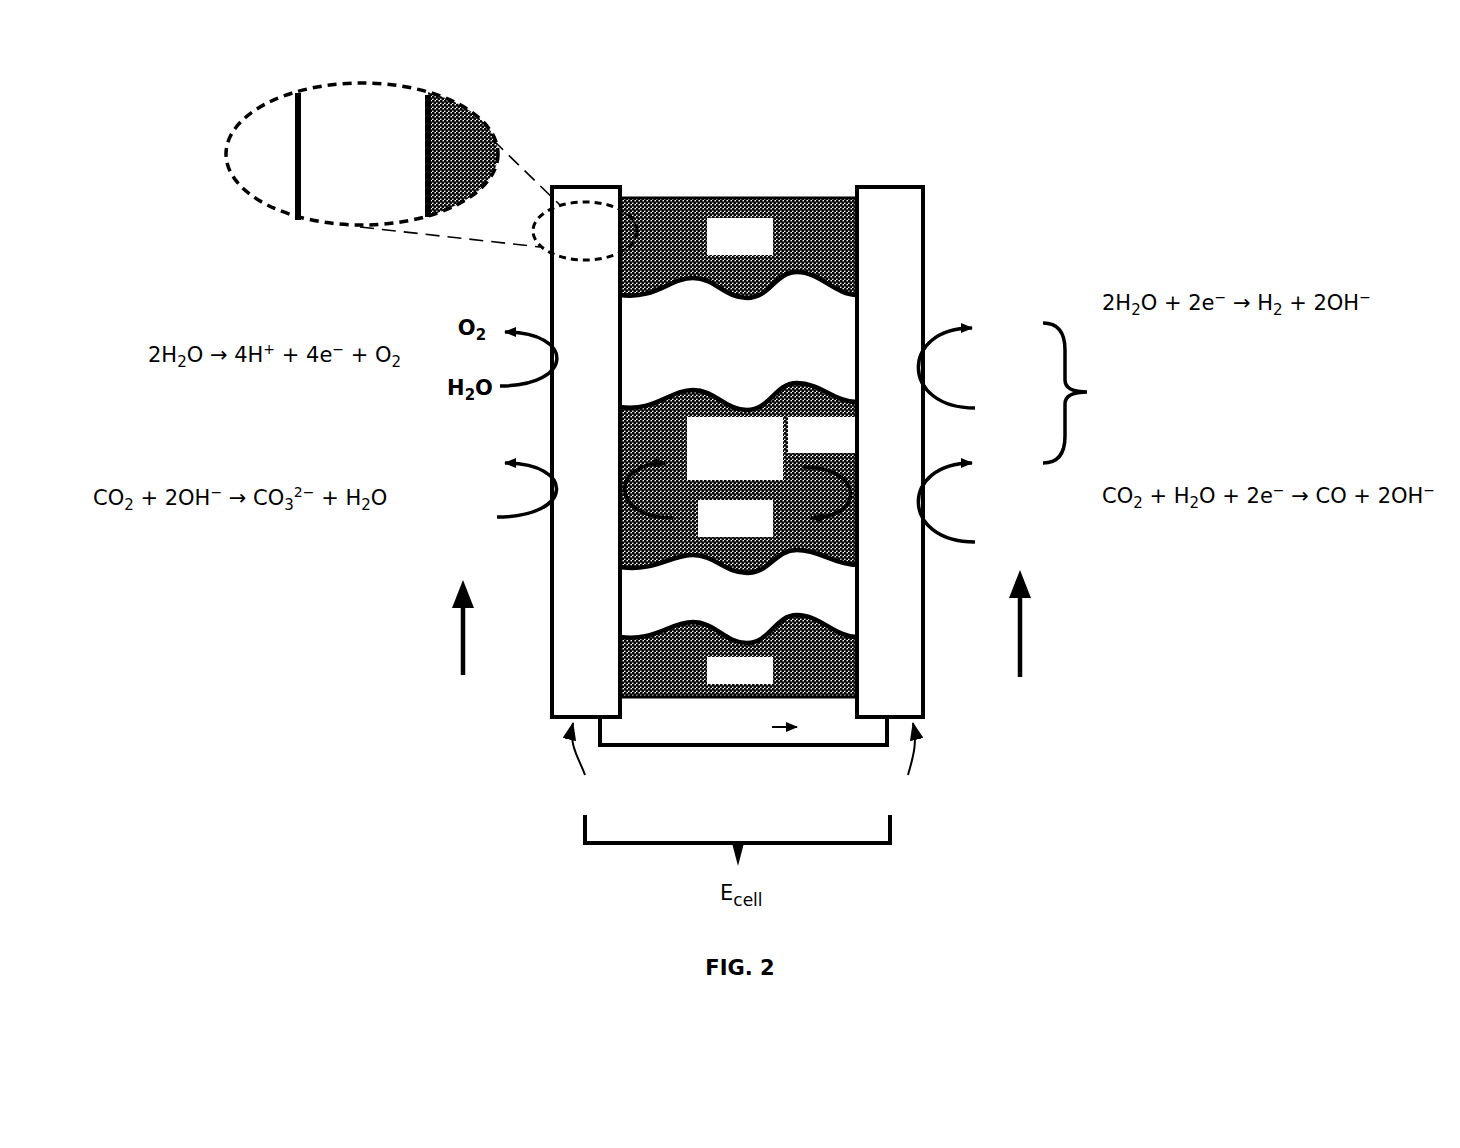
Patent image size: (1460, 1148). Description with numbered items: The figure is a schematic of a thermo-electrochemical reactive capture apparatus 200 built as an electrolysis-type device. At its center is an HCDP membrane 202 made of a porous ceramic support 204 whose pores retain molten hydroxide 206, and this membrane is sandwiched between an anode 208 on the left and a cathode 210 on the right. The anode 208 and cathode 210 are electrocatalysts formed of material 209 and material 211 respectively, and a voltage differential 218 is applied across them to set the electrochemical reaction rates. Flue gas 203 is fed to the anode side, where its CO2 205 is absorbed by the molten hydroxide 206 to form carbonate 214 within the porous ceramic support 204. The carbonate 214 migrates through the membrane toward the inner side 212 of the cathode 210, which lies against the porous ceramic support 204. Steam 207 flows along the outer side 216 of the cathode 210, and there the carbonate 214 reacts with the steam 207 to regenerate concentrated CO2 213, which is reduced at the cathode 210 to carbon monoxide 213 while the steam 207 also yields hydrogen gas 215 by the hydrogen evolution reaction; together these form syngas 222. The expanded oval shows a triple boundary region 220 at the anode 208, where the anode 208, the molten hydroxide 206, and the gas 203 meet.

The thermo-electrochemical reactive capture apparatus 200 is at (570, 115).
The HCDP membrane 202 is at (728, 192).
The flue gas 203 is at (248, 167).
The porous ceramic support 204 is at (720, 357).
The CO2 205 is at (501, 510).
The molten hydroxide 206 is at (438, 167).
The steam 207 is at (1019, 656).
The anode 208 is at (338, 167).
The anode material 209 is at (565, 679).
The cathode 210 is at (905, 692).
The cathode material 211 is at (630, 352).
The inner side of the cathode 212 is at (855, 341).
The concentrated CO2 / carbon monoxide 213 is at (870, 535).
The carbonate 214 is at (707, 480).
The hydrogen gas 215 is at (972, 374).
The outer side of the cathode 216 is at (930, 242).
The voltage differential 218 is at (725, 745).
The triple boundary region 220 is at (303, 73).
The syngas 222 is at (1113, 393).